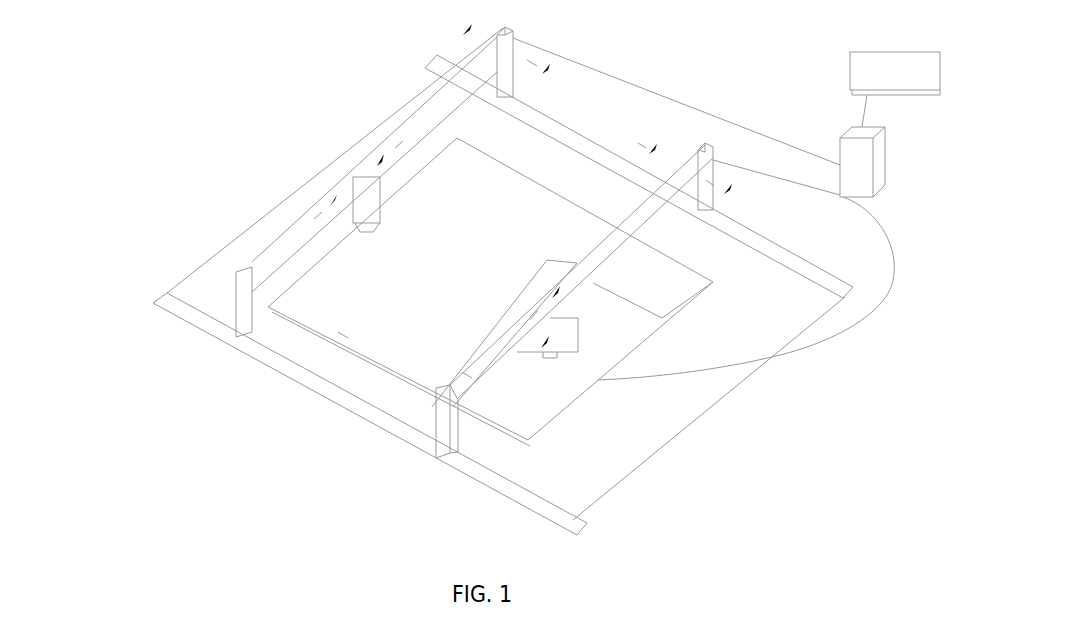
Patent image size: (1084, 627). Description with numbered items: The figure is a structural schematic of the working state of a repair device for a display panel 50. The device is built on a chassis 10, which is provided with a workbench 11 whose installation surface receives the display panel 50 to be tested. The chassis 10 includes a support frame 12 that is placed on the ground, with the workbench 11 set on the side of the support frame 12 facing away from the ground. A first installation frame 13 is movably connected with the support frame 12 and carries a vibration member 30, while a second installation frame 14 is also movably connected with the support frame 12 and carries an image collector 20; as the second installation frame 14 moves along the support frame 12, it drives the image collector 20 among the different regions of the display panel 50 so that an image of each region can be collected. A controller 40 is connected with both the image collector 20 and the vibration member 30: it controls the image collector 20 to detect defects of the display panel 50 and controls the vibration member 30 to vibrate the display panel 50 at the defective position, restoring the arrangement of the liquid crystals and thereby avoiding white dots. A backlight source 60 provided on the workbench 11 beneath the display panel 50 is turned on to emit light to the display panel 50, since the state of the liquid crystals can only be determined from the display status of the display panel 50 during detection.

The chassis 10 is at (97, 160).
The workbench 11 is at (217, 273).
The support frame 12 is at (183, 308).
The first installation frame 13 is at (263, 263).
The second installation frame 14 is at (467, 377).
The image collector 20 is at (557, 343).
The vibration member 30 is at (362, 200).
The controller 40 is at (853, 128).
The display panel 50 is at (437, 380).
The backlight source 60 is at (343, 335).